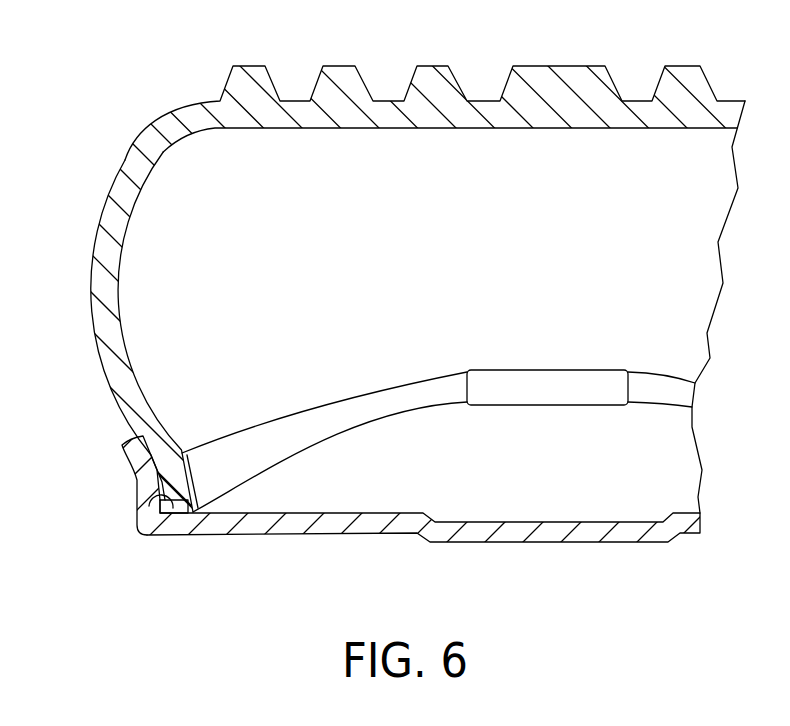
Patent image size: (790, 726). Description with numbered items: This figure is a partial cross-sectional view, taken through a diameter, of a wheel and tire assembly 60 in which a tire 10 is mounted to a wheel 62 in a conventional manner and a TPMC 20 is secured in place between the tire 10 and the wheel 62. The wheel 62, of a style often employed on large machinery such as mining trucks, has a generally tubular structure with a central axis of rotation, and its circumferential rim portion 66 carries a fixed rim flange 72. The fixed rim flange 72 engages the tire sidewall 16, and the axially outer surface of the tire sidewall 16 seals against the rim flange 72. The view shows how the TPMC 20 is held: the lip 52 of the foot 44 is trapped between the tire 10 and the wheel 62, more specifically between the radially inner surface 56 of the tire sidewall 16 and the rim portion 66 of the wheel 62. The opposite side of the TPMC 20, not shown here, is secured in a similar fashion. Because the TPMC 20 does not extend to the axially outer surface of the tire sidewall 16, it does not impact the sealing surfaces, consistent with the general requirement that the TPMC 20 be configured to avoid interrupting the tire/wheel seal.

The tire 10 is at (190, 108).
The tire sidewall 16 is at (98, 281).
The TPMC 20 is at (485, 351).
The foot 44 is at (270, 498).
The lip 52 is at (177, 513).
The radially inner surface 56 is at (165, 496).
The wheel and tire assembly 60 is at (101, 104).
The wheel 62 is at (226, 559).
The rim portion 66 is at (372, 523).
The fixed rim flange 72 is at (148, 480).